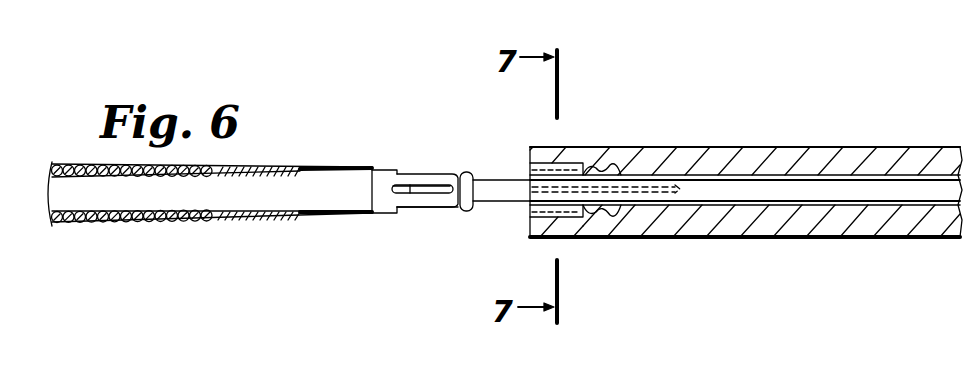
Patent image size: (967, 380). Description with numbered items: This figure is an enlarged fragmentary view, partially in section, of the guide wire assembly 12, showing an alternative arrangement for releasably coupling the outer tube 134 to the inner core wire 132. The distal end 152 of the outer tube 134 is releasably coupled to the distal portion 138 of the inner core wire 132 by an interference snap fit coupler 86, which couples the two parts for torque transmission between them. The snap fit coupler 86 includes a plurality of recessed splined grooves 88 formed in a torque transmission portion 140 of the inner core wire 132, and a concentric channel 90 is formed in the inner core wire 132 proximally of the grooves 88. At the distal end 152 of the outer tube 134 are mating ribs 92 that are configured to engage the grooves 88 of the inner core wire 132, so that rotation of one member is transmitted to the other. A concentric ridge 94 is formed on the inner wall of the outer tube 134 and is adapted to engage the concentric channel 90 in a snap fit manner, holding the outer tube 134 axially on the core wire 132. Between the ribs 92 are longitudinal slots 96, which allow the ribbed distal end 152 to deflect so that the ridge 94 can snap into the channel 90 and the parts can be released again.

The housing / connector body 12 is at (757, 85).
The interference snap fit coupler 86 is at (430, 212).
The recessed splined grooves 88 is at (409, 181).
The concentric channel 90 is at (458, 170).
The mating ribs 92 is at (552, 164).
The concentric ridge 94 is at (620, 166).
The longitudinal slots 96 is at (658, 190).
The inner core wire 132 is at (338, 219).
The outer tube 134 is at (797, 144).
The distal portion 138 is at (273, 193).
The torque transmission portion 140 is at (380, 168).
The distal end 152 is at (530, 230).